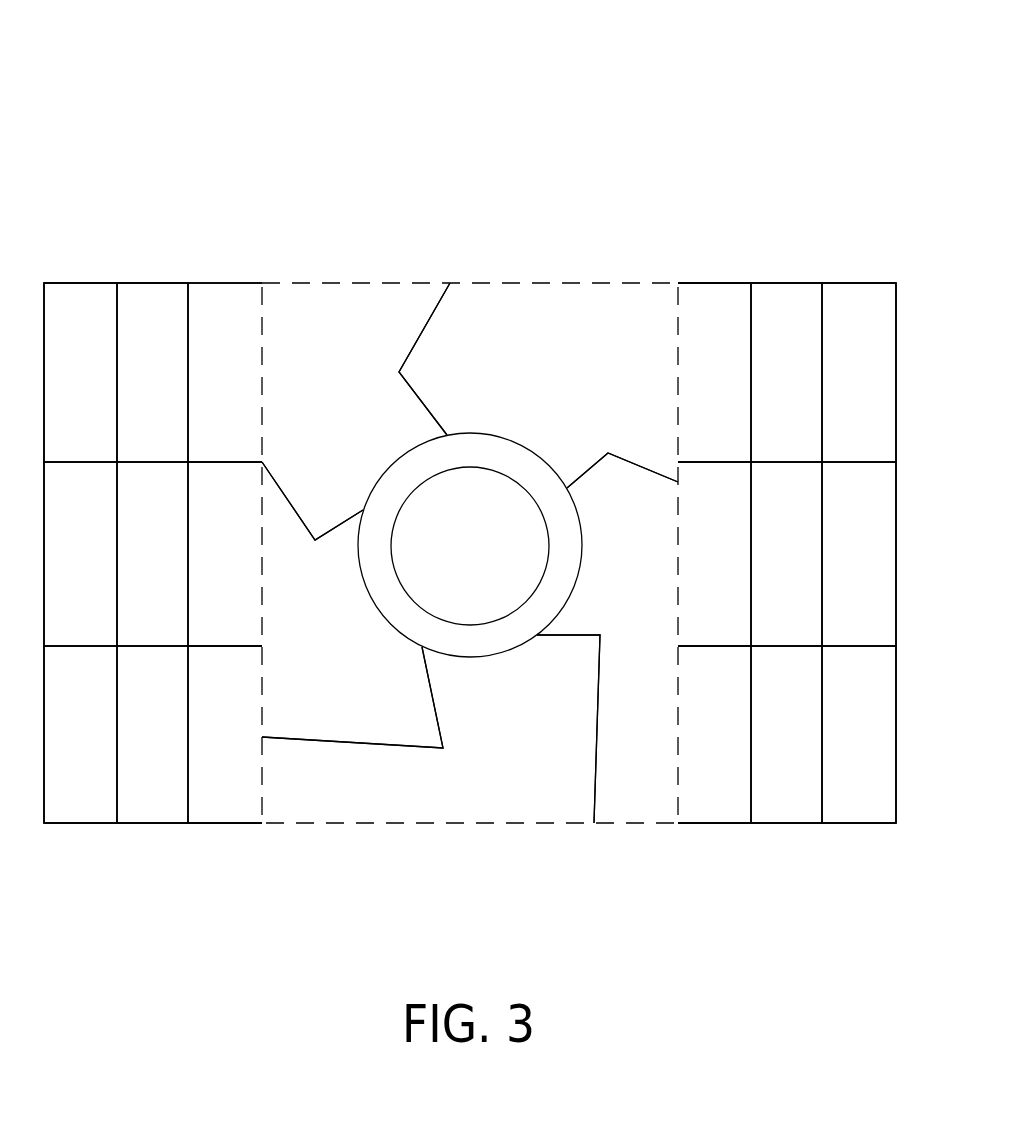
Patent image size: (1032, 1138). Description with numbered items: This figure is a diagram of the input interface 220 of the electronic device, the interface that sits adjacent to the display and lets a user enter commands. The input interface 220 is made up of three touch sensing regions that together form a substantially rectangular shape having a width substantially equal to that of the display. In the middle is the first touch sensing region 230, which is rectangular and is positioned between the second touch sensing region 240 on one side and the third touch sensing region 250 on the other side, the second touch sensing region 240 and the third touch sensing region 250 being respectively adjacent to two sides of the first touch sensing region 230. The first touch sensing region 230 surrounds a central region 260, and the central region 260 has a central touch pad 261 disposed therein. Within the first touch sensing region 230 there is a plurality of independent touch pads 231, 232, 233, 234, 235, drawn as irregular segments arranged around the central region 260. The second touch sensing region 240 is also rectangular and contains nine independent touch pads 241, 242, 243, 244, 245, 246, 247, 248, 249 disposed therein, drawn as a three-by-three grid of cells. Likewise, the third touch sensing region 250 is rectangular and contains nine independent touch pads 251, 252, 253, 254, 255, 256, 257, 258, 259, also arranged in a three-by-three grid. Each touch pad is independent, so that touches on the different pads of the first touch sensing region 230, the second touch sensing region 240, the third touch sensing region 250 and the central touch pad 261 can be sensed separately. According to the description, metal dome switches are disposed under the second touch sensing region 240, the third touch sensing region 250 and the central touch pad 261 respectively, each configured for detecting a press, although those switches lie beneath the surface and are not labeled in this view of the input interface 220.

The input interface 220 is at (733, 118).
The first touch sensing region 230 is at (383, 283).
The touch pad 231 is at (568, 378).
The touch pad 232 is at (653, 573).
The touch pad 233 is at (532, 783).
The touch pad 234 is at (348, 673).
The touch pad 235 is at (362, 409).
The second touch sensing region 240 is at (152, 283).
The touch pad 241 is at (108, 391).
The touch pad 242 is at (179, 391).
The touch pad 243 is at (251, 391).
The touch pad 244 is at (108, 574).
The touch pad 245 is at (179, 574).
The touch pad 246 is at (251, 574).
The touch pad 247 is at (108, 753).
The touch pad 248 is at (179, 753).
The touch pad 249 is at (251, 753).
The third touch sensing region 250 is at (795, 283).
The touch pad 251 is at (741, 391).
The touch pad 252 is at (812, 391).
The touch pad 253 is at (884, 391).
The touch pad 254 is at (741, 574).
The touch pad 255 is at (812, 574).
The touch pad 256 is at (884, 574).
The touch pad 257 is at (741, 753).
The touch pad 258 is at (812, 753).
The touch pad 259 is at (884, 753).
The central region 260 is at (483, 457).
The central touch pad 261 is at (493, 562).